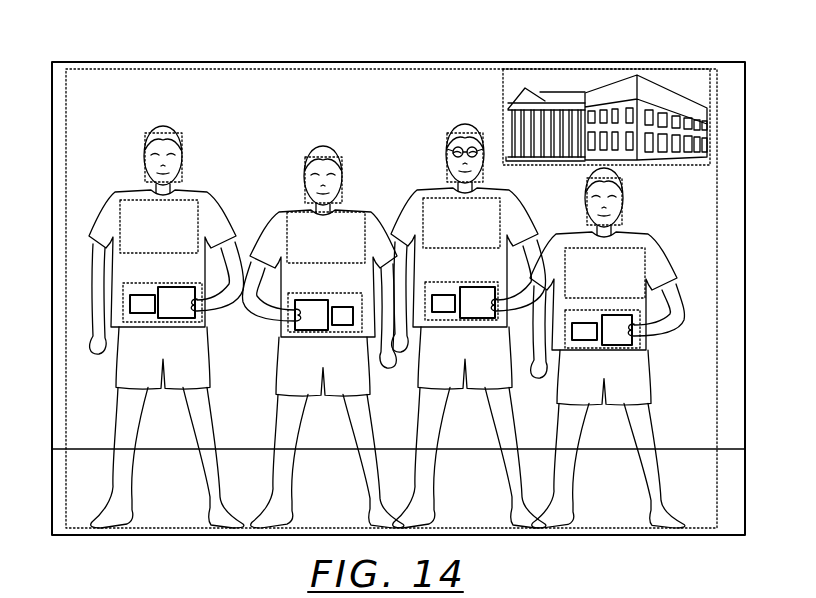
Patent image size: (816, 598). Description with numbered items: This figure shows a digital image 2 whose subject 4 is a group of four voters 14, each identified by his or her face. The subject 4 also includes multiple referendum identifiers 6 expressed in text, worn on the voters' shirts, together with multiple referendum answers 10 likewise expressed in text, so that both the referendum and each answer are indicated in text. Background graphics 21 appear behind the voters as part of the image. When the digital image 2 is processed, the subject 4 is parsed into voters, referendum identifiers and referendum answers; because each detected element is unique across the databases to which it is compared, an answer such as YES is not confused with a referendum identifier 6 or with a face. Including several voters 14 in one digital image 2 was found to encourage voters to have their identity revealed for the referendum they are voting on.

The digital image 2 is at (52, 83).
The subject of digital image 4 is at (745, 302).
The referendum identifier expressed as text 6 is at (133, 200).
The referendum answer in text 10 is at (198, 287).
The voter identified by face 14 is at (172, 137).
The background graphics 21 is at (680, 68).